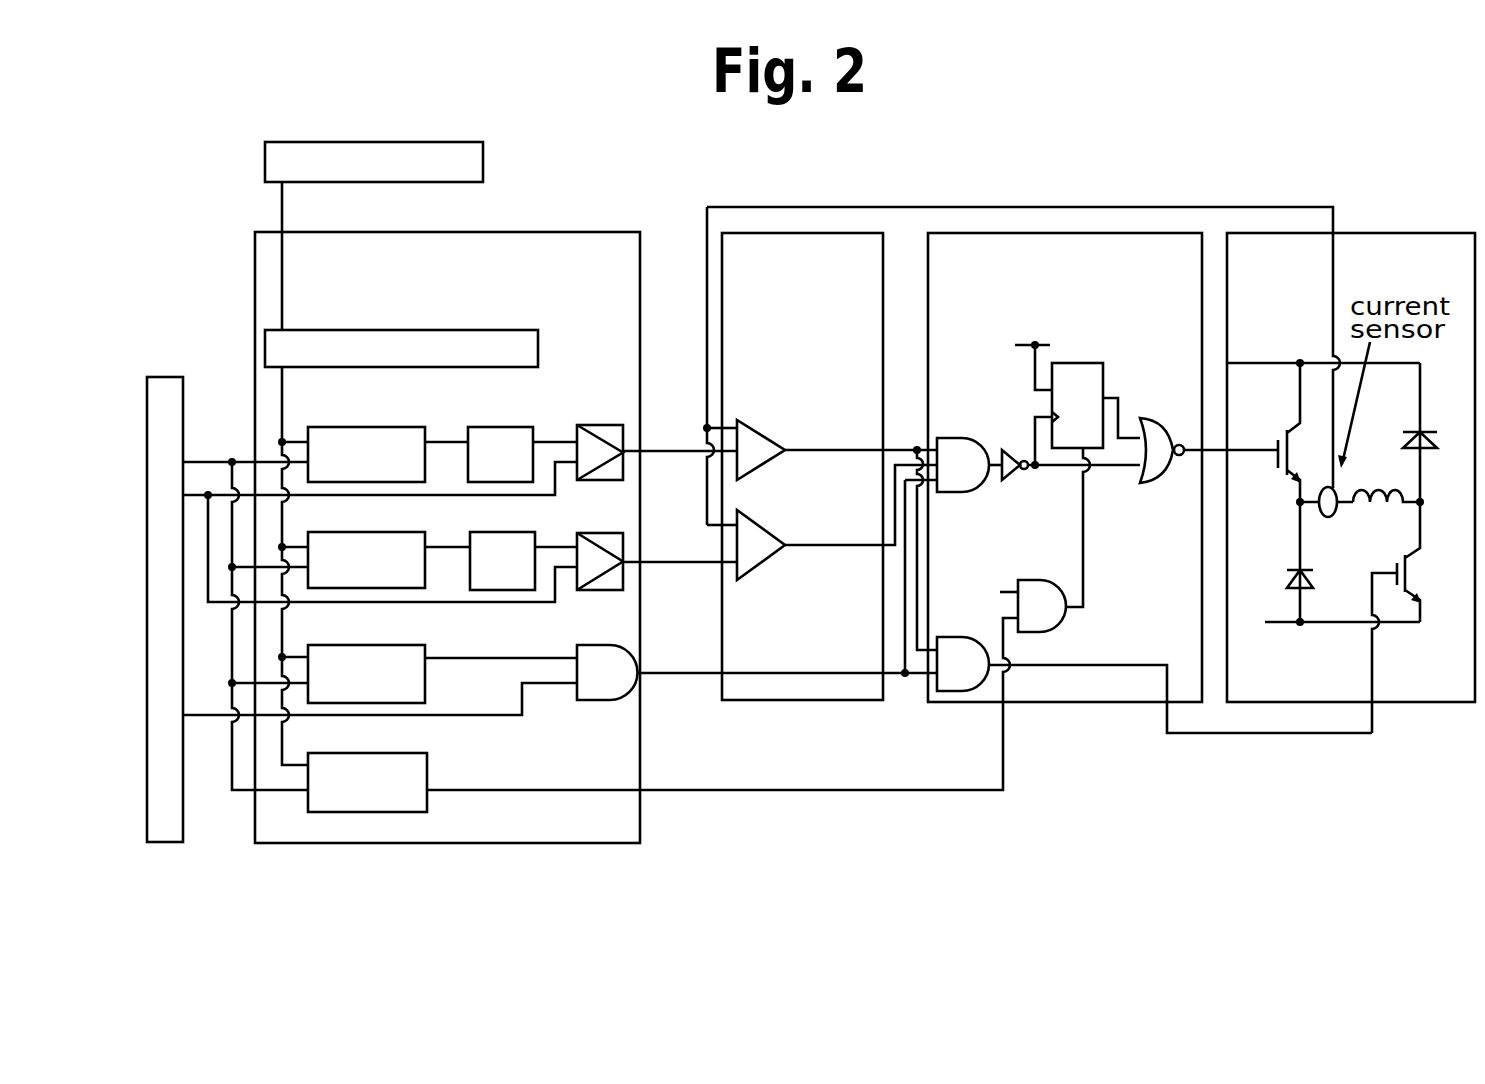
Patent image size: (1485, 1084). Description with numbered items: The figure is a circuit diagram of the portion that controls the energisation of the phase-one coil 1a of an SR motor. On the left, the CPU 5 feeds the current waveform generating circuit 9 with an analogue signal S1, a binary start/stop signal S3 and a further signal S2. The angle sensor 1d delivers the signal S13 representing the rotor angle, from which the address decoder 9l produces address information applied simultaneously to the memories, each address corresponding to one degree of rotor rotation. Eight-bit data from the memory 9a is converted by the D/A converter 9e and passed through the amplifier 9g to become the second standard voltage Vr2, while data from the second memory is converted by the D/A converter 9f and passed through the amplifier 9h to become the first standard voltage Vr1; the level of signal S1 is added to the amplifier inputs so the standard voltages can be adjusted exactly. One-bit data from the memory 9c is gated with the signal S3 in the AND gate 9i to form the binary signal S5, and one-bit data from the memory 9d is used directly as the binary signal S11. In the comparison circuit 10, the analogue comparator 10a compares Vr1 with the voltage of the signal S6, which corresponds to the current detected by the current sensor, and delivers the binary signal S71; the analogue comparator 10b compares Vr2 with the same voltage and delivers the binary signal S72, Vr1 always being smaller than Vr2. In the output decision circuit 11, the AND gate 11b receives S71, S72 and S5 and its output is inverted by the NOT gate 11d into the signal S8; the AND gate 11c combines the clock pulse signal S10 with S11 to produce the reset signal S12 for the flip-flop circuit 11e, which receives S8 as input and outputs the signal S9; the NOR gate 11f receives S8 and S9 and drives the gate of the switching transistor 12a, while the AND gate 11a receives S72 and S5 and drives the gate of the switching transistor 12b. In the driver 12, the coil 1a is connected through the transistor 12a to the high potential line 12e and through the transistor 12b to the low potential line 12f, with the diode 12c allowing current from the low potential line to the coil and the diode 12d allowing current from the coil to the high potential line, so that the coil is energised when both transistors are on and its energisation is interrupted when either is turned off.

The angle sensor 1d is at (351, 235).
The CPU 5 is at (165, 586).
The current waveform generating circuit 9 is at (447, 537).
The address decoder 9l is at (401, 327).
The memory 9a is at (388, 435).
The D/A converter 9e is at (522, 435).
The amplifier 9g is at (600, 434).
The amplifier 9h is at (465, 542).
The D/A converter 9f is at (523, 542).
The memory 9c is at (442, 654).
The AND gate 9i is at (606, 653).
The memory 9d is at (367, 764).
The comparison circuit 10 is at (802, 466).
The analogue comparator 10a is at (754, 531).
The analogue comparator 10b is at (752, 433).
The output decision circuit 11 is at (1065, 467).
The AND gate 11a is at (1153, 666).
The AND gate 11b is at (968, 445).
The AND gate 11c is at (1041, 586).
The NOT gate 11d is at (1006, 486).
The flip-flop circuit 11e is at (1059, 388).
The NOR gate 11f is at (1209, 431).
The driver 12 is at (1351, 468).
The switching transistor IGBT 12a is at (1292, 434).
The switching transistor IGBT 12b is at (1423, 617).
The diode 12c is at (1280, 562).
The diode 12d is at (1438, 432).
The high potential line 12e is at (1323, 346).
The low potential line 12f is at (1342, 604).
The coil 1a is at (1388, 477).
The analogue signal S1 is at (380, 530).
The signal S2 is at (245, 444).
The start/stop signal S3 is at (380, 706).
The binary signal S5 is at (788, 656).
The signal S6 is at (1021, 346).
The binary signal S8 is at (1084, 463).
The binary signal S9 is at (1124, 399).
The clock pulse signal S10 is at (974, 575).
The binary signal S11 is at (722, 704).
The reset signal S12 is at (1103, 527).
The rotor angle signal S13 is at (307, 566).
The binary signal S71 is at (861, 507).
The binary signal S72 is at (861, 434).
The first standard voltage Vr1 is at (680, 548).
The second standard voltage Vr2 is at (680, 434).